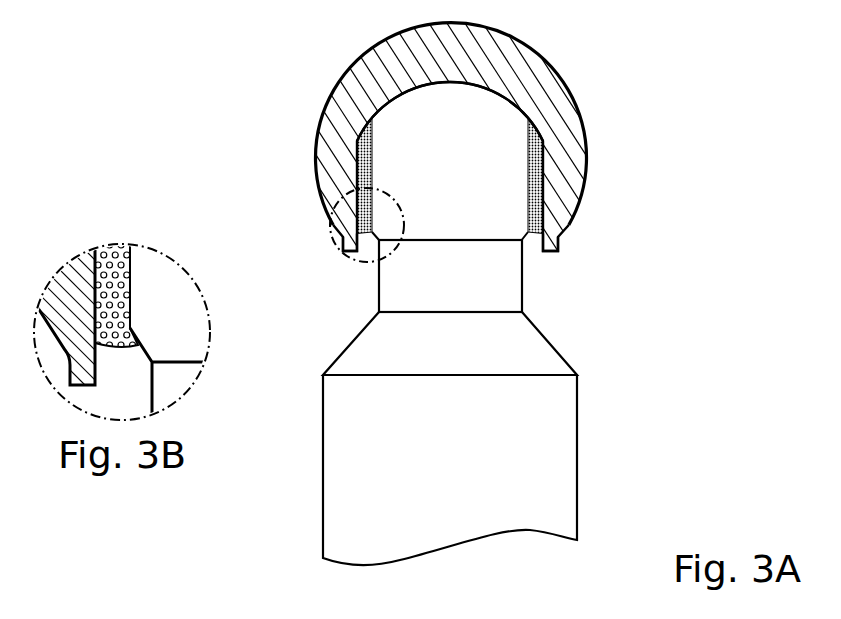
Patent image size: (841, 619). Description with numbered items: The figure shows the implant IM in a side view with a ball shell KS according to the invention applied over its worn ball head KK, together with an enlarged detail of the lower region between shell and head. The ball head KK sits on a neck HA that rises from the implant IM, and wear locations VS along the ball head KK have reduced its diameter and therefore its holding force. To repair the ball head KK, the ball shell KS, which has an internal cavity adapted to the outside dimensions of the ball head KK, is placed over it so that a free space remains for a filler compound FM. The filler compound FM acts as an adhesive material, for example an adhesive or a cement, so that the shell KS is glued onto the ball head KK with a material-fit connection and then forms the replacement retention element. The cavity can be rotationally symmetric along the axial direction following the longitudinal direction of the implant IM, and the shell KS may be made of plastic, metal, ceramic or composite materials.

The ball shell KS is at (525, 68).
The filler compound FM is at (543, 148).
The wear locations VS is at (543, 205).
The ball head KK is at (440, 188).
The neck HA is at (457, 277).
The implant IM is at (523, 448).